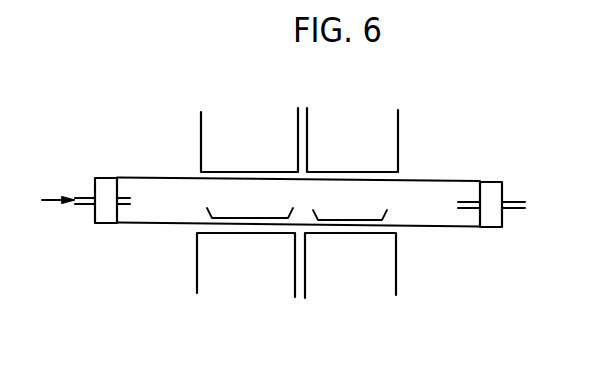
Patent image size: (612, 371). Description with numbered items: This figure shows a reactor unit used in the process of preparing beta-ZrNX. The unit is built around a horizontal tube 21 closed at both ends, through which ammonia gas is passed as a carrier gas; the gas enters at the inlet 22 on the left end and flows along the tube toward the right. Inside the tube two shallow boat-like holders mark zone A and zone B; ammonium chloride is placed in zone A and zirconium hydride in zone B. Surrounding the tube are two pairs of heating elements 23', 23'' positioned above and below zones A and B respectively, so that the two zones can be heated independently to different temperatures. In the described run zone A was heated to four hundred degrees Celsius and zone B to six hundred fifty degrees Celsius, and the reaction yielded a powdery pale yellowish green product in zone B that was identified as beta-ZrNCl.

The discharge tube 21 is at (150, 223).
The gas inlet 22 is at (57, 216).
The first pair of electrodes (region A) 23' is at (248, 210).
The second pair of electrodes (region B) 23'' is at (362, 210).